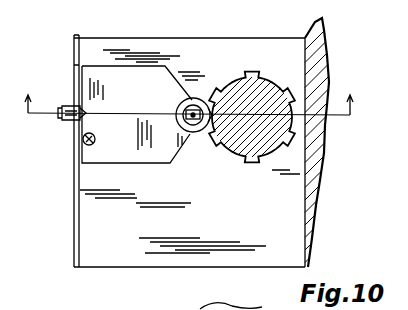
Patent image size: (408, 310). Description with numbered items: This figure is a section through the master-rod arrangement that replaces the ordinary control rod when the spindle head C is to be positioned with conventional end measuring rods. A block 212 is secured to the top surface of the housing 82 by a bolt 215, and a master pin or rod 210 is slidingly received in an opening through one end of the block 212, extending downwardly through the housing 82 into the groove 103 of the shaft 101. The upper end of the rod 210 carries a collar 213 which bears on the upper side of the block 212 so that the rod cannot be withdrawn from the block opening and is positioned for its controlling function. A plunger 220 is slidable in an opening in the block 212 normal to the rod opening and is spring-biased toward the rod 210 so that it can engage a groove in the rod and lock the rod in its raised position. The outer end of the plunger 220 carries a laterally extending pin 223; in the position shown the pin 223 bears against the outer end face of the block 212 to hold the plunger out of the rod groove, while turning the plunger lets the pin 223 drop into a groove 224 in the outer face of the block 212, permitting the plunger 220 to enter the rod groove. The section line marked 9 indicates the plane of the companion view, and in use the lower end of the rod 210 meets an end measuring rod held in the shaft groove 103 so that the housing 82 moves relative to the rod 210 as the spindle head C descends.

The housing 82 is at (85, 217).
The pin 223 is at (73, 80).
The plunger 220 is at (62, 113).
The groove 224 is at (87, 122).
The bolt 215 is at (84, 143).
The block 212 is at (150, 162).
The collar 213 is at (177, 106).
The master pin or rod 210 is at (197, 122).
The shaft 101 is at (260, 64).
The groove 103 is at (211, 113).
The spindle head C is at (332, 56).
The section line 9- 9 is at (190, 97).